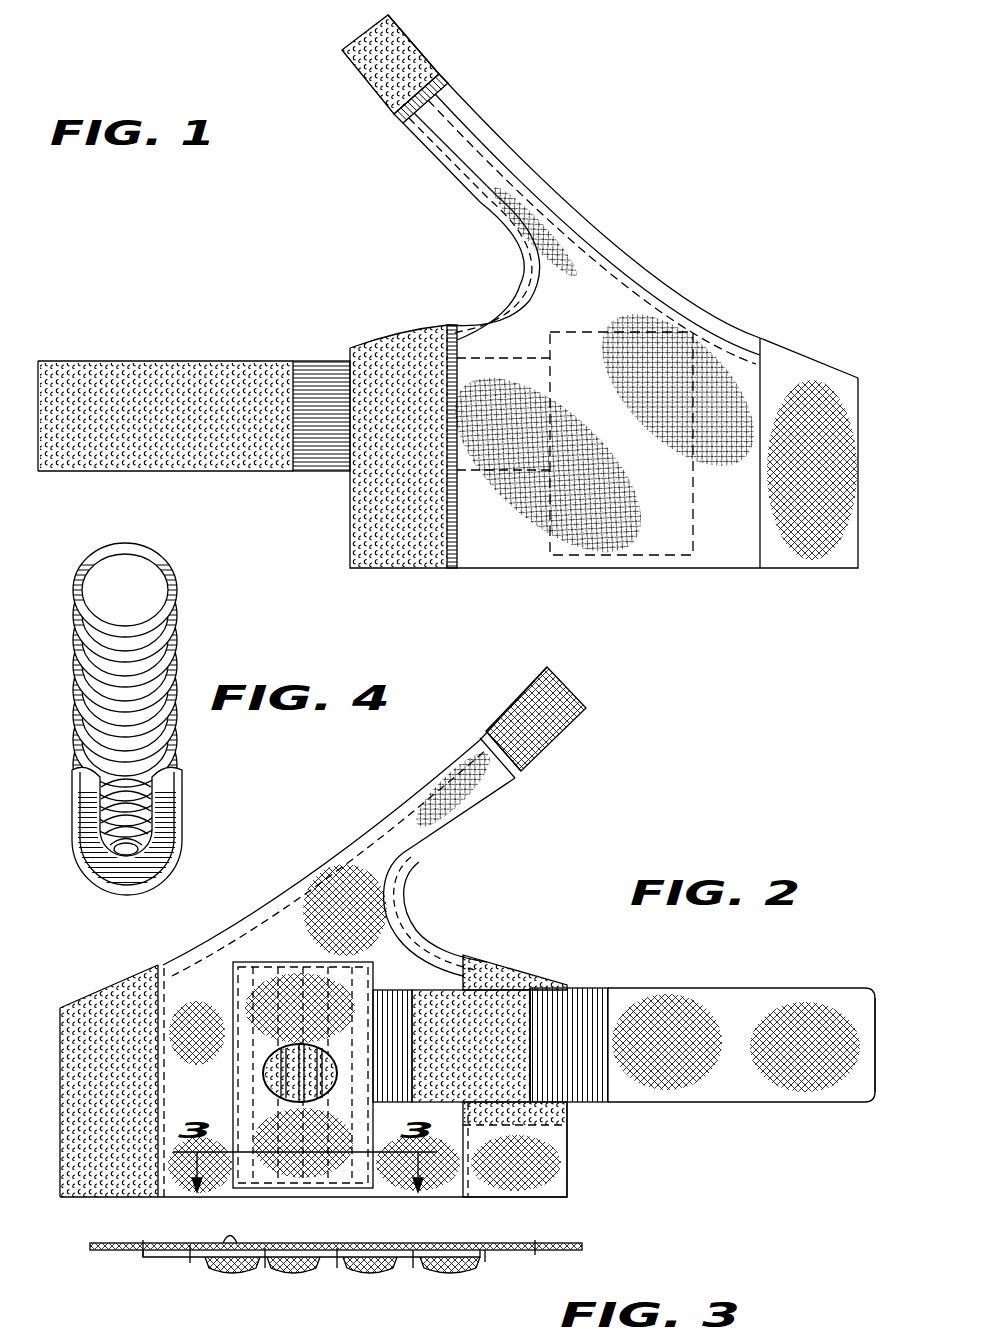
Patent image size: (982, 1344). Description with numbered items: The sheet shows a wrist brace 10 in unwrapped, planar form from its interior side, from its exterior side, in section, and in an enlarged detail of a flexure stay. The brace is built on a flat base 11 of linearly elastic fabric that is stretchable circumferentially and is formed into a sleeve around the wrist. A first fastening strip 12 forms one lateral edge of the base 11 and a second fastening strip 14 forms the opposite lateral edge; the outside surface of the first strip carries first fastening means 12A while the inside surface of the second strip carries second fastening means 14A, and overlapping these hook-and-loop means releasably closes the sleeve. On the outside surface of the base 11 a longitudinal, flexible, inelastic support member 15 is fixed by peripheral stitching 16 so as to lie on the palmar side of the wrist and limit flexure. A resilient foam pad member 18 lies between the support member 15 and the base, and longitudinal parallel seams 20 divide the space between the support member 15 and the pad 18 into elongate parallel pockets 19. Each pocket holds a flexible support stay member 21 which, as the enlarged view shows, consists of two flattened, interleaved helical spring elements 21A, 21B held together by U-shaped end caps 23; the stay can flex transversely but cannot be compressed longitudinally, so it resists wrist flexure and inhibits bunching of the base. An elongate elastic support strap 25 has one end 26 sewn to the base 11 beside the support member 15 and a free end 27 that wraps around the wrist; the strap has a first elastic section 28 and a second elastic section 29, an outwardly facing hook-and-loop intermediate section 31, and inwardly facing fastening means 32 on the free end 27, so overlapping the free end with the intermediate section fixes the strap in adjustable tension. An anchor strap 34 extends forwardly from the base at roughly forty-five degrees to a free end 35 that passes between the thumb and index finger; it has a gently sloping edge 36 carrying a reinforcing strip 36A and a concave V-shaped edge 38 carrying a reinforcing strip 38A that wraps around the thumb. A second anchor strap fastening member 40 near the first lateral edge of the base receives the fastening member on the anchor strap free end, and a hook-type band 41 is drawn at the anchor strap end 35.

In FIG. 1, the wrist brace 10 is at (642, 216).
In FIG. 2, the wrist brace 10 is at (600, 798).
In FIG. 1, the base 11 is at (502, 563).
In FIG. 2, the base 11 is at (185, 1188).
In FIG. 3, the base 11 is at (210, 1272).
In FIG. 1, the first fastening strip 12 is at (808, 385).
In FIG. 2, the first fastening strip 12 is at (107, 1185).
In FIG. 2, the first fastening means 12A is at (110, 1010).
In FIG. 1, the second fastening strip 14 is at (383, 568).
In FIG. 2, the second fastening strip 14 is at (537, 1172).
In FIG. 1, the second fastening means 14A is at (373, 527).
In FIG. 1, the support member 15 is at (693, 530).
In FIG. 2, the support member 15 is at (313, 962).
In FIG. 3, the support member 15 is at (463, 1273).
In FIG. 2, the peripheral stitching 16 is at (237, 1000).
In FIG. 3, the peripheral stitching 16 is at (143, 1258).
In FIG. 3, the foam pad member 18 is at (460, 1253).
In FIG. 2, the longitudinal pockets 19 is at (270, 1175).
In FIG. 2, the longitudinal parallel seams 20 is at (313, 1175).
In FIG. 4, the support stay member 21 is at (167, 690).
In FIG. 2, the support stay member 21 is at (263, 1073).
In FIG. 3, the support stay member 21 is at (308, 1273).
In FIG. 4, the helical spring element 21A is at (150, 733).
In FIG. 4, the helical spring element 21B is at (147, 743).
In FIG. 4, the U-shaped end cap 23 is at (155, 848).
In FIG. 1, the support strap 25 is at (283, 476).
In FIG. 2, the support strap 25 is at (616, 986).
In FIG. 2, the strap end 26 is at (385, 988).
In FIG. 1, the free end 27 is at (75, 395).
In FIG. 2, the free end 27 is at (876, 990).
In FIG. 2, the first elastic section 28 is at (388, 1015).
In FIG. 1, the second elastic section 29 is at (315, 382).
In FIG. 2, the second elastic section 29 is at (583, 987).
In FIG. 2, the intermediate section 31 is at (495, 1003).
In FIG. 1, the fastening means 32 is at (173, 388).
In FIG. 2, the anchor strap 34 is at (420, 780).
In FIG. 1, the free end 35 is at (342, 50).
In FIG. 2, the free end 35 is at (556, 700).
In FIG. 1, the sloping edge 36 is at (542, 173).
In FIG. 2, the sloping edge 36 is at (327, 857).
In FIG. 1, the reinforcing strip 36A is at (637, 258).
In FIG. 1, the V-shaped edge 38 is at (517, 277).
In FIG. 2, the V-shaped edge 38 is at (408, 903).
In FIG. 1, the reinforcing strip 38A is at (462, 168).
In FIG. 2, the second anchor strap fastening member 40 is at (530, 987).
In FIG. 1, the hook fastener 41 is at (426, 70).